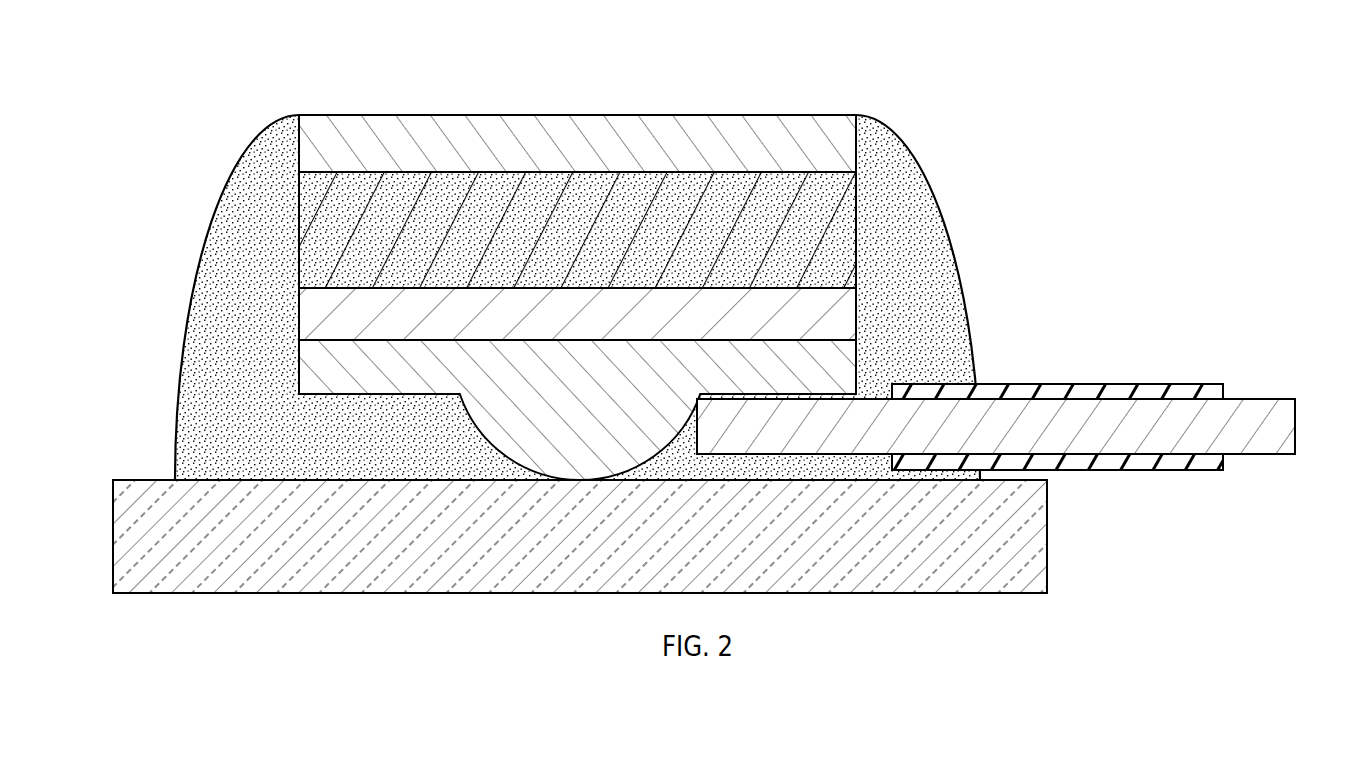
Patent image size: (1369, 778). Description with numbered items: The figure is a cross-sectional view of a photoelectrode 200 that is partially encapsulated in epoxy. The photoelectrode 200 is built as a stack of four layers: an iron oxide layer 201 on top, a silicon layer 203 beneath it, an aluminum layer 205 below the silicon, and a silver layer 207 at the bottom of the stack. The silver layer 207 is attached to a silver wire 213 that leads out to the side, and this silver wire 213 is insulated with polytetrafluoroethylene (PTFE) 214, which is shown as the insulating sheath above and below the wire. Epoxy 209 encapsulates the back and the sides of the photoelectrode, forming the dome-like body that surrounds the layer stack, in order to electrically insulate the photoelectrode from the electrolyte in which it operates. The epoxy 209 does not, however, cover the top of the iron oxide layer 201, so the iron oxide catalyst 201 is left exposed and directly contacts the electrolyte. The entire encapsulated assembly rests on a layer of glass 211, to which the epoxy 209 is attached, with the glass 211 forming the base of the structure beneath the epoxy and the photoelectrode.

The photoelectrode 200 is at (732, 324).
The iron oxide layer 201 is at (452, 130).
The silicon layer 203 is at (843, 243).
The aluminum layer 205 is at (853, 315).
The silver layer 207 is at (853, 369).
The epoxy 209 is at (250, 190).
The glass layer 211 is at (388, 583).
The silver wire 213 is at (1266, 425).
The polytetrafluoroethylene (PTFE) insulation 214 is at (1190, 388).